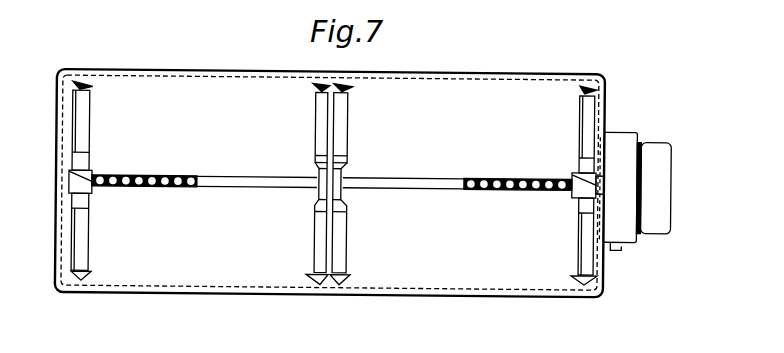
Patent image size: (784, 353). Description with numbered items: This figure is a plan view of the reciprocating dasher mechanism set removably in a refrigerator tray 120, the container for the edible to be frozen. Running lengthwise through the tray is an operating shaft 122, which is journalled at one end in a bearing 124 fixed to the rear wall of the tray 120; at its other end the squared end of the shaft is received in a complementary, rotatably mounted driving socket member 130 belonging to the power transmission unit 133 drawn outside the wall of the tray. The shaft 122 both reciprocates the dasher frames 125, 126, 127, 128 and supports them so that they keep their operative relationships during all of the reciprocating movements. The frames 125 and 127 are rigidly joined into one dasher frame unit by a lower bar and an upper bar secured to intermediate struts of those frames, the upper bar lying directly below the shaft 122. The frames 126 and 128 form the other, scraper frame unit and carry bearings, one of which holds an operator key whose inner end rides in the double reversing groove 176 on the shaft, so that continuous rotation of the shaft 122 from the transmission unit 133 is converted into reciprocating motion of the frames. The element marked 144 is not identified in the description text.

The refrigerator tray 120 is at (453, 298).
The operating shaft 122 is at (420, 178).
The bearing 124 is at (91, 169).
The dasher frame 125 is at (83, 240).
The dasher frame 126 is at (312, 238).
The dasher frame 127 is at (347, 240).
The dasher frame 128 is at (580, 242).
The driving socket member 130 is at (598, 186).
The power transmission unit 133 is at (637, 133).
The left bead chain 144 is at (175, 175).
The double reversing groove 176 is at (483, 191).